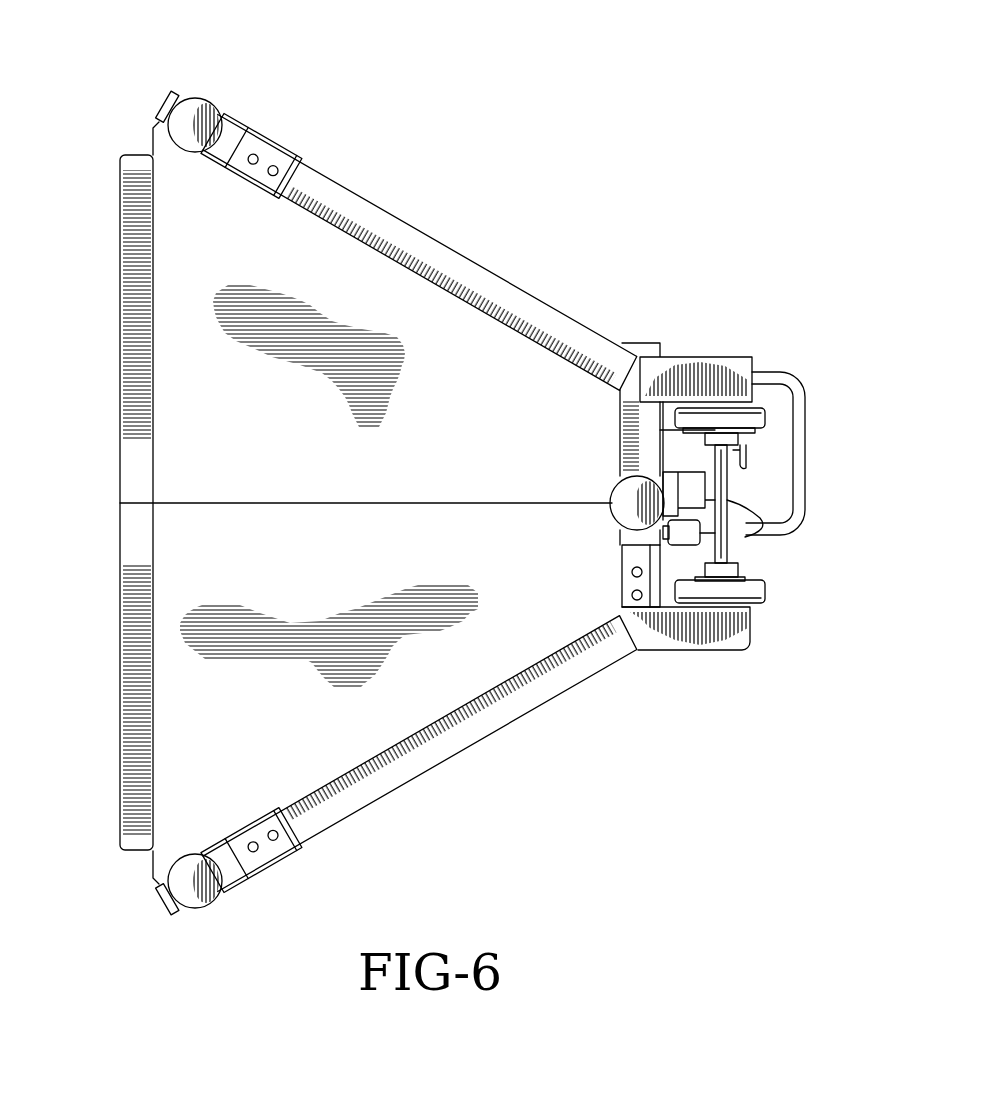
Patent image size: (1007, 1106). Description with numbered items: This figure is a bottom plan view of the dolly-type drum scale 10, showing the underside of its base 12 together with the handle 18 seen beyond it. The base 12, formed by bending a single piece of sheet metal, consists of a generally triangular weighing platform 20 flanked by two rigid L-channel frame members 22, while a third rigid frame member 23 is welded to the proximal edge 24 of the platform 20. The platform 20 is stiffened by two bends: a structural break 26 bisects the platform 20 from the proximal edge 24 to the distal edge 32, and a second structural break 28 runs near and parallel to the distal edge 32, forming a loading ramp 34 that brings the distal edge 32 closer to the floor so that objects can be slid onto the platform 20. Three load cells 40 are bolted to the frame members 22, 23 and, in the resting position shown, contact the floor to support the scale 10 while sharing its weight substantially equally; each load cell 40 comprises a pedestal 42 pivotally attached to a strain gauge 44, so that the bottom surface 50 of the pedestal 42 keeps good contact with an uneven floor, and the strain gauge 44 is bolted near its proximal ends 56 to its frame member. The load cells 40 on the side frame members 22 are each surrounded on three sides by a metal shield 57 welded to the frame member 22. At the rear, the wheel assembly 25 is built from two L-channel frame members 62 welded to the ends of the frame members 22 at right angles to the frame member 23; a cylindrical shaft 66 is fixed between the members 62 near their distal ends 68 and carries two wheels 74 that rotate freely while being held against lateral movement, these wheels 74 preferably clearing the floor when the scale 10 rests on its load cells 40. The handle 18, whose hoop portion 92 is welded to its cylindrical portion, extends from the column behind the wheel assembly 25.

The dolly-type drum scale 10 is at (522, 136).
The base 12 is at (478, 742).
The handle 18 is at (787, 473).
The weighing platform 20 is at (215, 247).
The rigid frame members 22 is at (360, 212).
The third rigid frame member 23 is at (648, 440).
The proximal edge 24 is at (618, 420).
The wheel assembly 25 is at (714, 488).
The structural break 26 is at (255, 503).
The second structural break 28 is at (153, 549).
The distal edge 32 is at (135, 682).
The loading ramp 34 is at (133, 820).
The load cells 40 is at (240, 114).
The pedestal 42 is at (166, 114).
The strain gauge 44 is at (276, 150).
The bottom surface 50 is at (194, 108).
The proximal ends 56 is at (288, 173).
The metal shield 57 is at (295, 160).
The L-channel frame members 62 is at (740, 370).
The cylindrical shaft 66 is at (718, 486).
The distal ends 68 is at (752, 627).
The wheels 74 is at (757, 418).
The hoop portion 92 is at (807, 465).